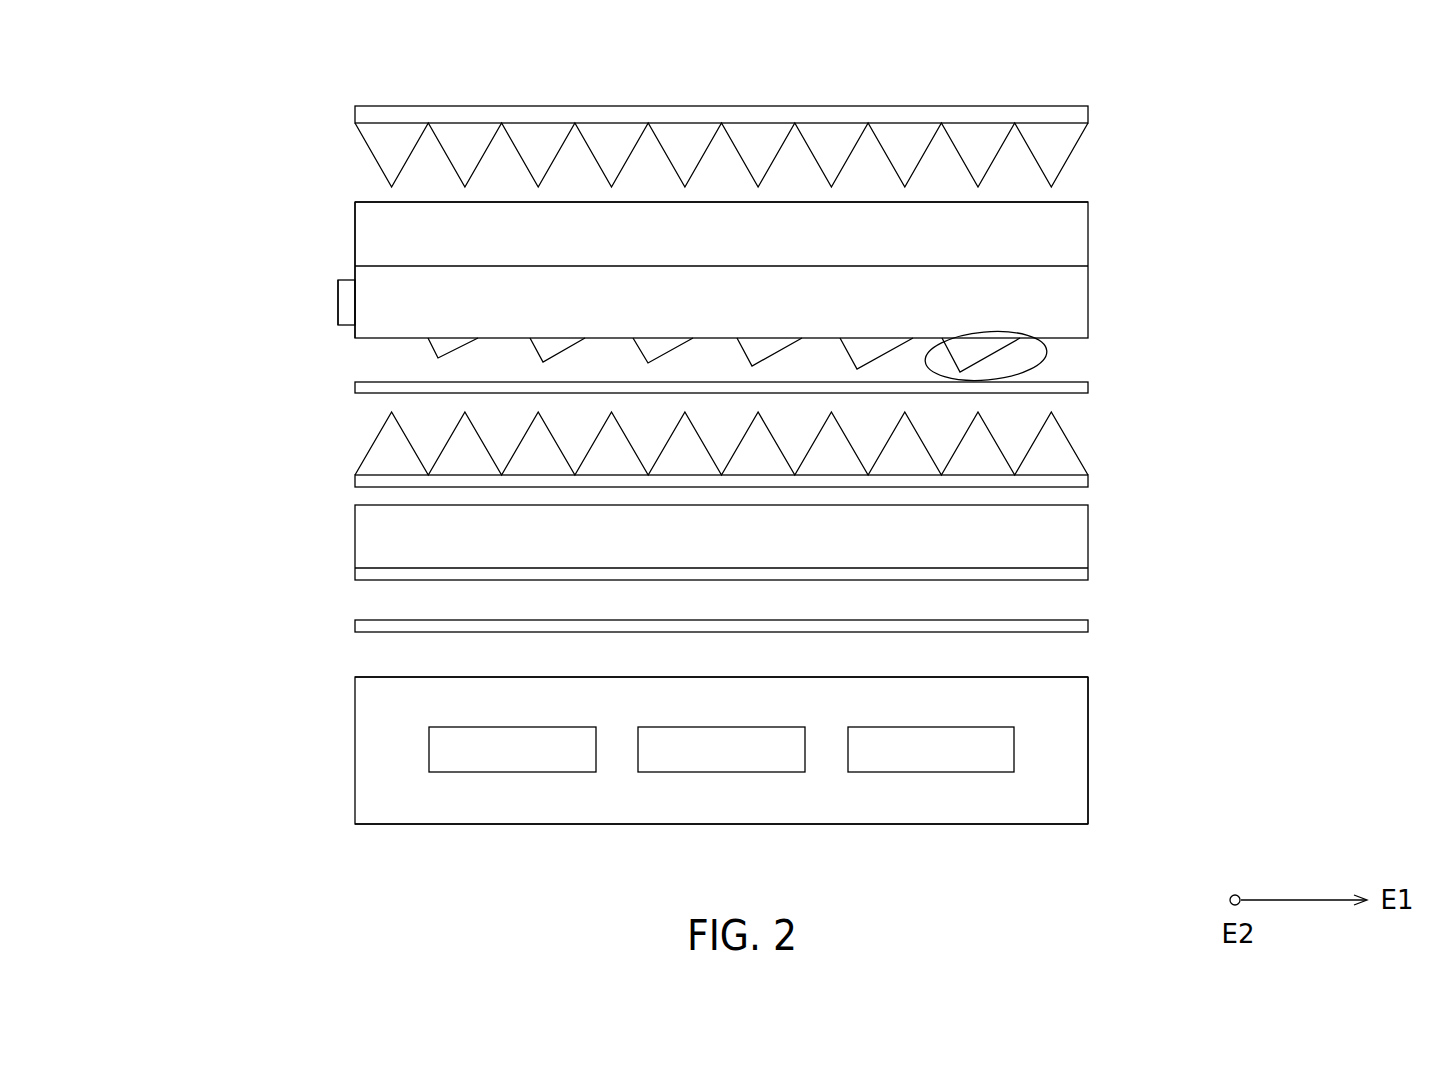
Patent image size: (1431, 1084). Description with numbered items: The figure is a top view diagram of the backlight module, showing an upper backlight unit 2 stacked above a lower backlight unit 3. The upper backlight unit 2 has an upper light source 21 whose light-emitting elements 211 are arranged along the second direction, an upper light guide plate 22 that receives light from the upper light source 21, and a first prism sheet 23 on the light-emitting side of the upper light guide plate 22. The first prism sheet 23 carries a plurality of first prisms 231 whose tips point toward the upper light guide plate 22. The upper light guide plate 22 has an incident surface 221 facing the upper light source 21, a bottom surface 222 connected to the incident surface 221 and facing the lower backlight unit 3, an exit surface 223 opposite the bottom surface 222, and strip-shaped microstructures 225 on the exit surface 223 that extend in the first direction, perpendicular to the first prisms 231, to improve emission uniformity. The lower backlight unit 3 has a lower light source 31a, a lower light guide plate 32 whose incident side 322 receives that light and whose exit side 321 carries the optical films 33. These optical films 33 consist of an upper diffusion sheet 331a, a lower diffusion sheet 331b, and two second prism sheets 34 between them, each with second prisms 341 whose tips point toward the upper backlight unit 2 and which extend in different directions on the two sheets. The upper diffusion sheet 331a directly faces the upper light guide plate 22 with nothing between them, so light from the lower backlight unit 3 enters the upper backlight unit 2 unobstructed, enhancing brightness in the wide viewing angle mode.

The upper backlight unit 2 is at (155, 62).
The first prism sheet 23 is at (342, 118).
The first prisms 231 is at (392, 172).
The upper light guide plate 22 is at (1094, 310).
The strip-shaped microstructures 225 is at (1072, 208).
The exit surface 223 is at (1066, 265).
The incident surface 221 is at (353, 268).
The bottom surface 222 is at (1070, 340).
The upper light source 21 is at (330, 322).
The light-emitting elements 211 is at (338, 300).
The lower backlight unit 3 is at (162, 426).
The optical film 33 is at (329, 478).
The upper diffusion sheet 331a is at (1088, 388).
The second prisms 341 is at (1062, 452).
The second prism sheet 34 is at (1088, 534).
The lower diffusion sheet 331b is at (1088, 627).
The lower light guide plate 32 is at (344, 708).
The exit side 321 is at (1068, 677).
The incident side 322 is at (1072, 745).
The lower light source 31a is at (423, 765).